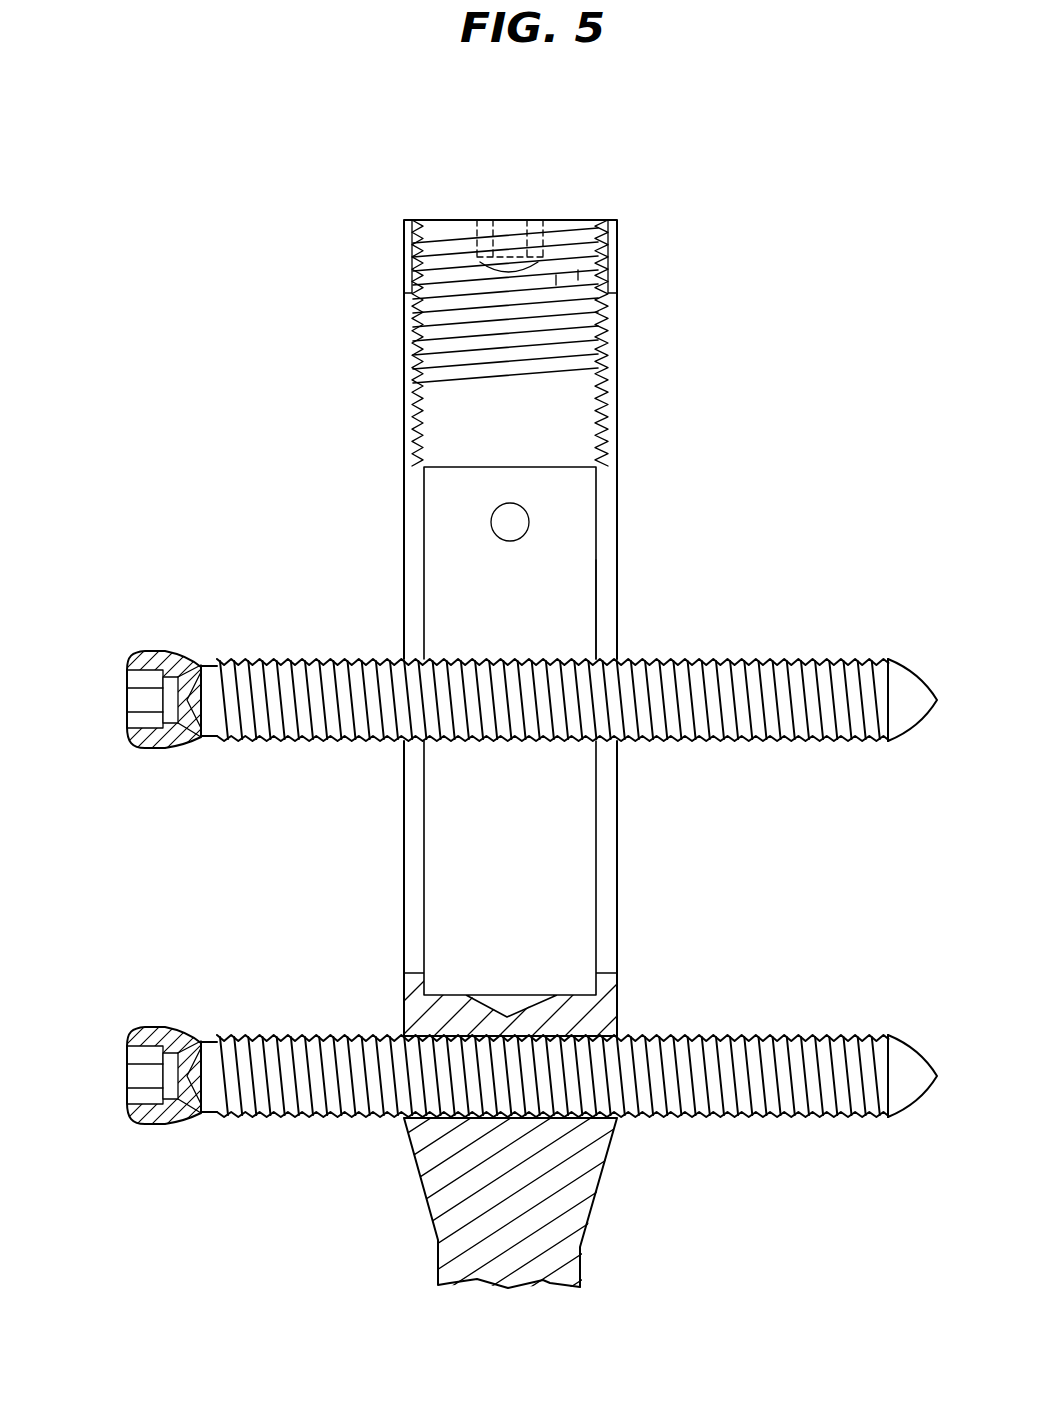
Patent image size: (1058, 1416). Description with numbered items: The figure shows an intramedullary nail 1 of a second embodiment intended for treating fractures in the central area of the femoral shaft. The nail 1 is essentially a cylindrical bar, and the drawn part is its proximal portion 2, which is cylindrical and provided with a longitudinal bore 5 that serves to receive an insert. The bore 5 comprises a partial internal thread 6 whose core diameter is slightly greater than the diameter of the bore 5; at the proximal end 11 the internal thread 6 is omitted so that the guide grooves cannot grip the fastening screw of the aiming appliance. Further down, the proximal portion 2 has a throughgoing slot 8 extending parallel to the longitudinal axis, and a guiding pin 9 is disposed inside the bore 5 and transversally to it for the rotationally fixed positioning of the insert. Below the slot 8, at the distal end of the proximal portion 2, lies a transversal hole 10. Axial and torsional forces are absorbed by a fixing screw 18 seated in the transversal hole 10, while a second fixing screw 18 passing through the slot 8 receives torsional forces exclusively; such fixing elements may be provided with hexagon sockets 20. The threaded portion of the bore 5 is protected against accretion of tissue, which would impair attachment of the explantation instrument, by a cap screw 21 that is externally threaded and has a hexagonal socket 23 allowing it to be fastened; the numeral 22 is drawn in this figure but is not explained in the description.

The nail 1 is at (655, 425).
The proximal portion 2 is at (378, 386).
The longitudinal bore 5 is at (600, 643).
The partial internal thread 6 is at (605, 318).
The throughgoing slot 8 is at (607, 643).
The guiding pin 9 is at (514, 524).
The transversal hole 10 is at (605, 1052).
The proximal end 11 is at (430, 218).
The fixing screw 18 is at (768, 697).
The hexagon socket 20 is at (133, 700).
The cap screw 21 is at (558, 280).
The recess 22 is at (580, 275).
The hexagonal socket 23 is at (530, 228).